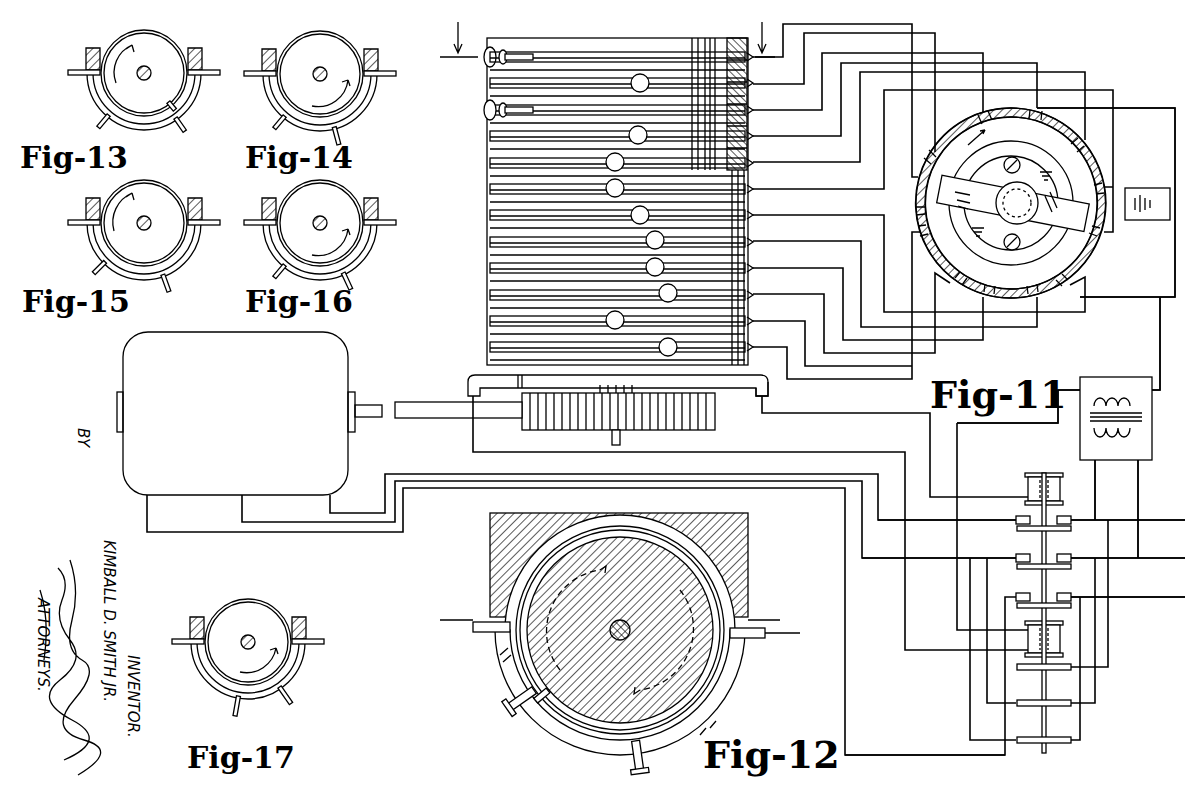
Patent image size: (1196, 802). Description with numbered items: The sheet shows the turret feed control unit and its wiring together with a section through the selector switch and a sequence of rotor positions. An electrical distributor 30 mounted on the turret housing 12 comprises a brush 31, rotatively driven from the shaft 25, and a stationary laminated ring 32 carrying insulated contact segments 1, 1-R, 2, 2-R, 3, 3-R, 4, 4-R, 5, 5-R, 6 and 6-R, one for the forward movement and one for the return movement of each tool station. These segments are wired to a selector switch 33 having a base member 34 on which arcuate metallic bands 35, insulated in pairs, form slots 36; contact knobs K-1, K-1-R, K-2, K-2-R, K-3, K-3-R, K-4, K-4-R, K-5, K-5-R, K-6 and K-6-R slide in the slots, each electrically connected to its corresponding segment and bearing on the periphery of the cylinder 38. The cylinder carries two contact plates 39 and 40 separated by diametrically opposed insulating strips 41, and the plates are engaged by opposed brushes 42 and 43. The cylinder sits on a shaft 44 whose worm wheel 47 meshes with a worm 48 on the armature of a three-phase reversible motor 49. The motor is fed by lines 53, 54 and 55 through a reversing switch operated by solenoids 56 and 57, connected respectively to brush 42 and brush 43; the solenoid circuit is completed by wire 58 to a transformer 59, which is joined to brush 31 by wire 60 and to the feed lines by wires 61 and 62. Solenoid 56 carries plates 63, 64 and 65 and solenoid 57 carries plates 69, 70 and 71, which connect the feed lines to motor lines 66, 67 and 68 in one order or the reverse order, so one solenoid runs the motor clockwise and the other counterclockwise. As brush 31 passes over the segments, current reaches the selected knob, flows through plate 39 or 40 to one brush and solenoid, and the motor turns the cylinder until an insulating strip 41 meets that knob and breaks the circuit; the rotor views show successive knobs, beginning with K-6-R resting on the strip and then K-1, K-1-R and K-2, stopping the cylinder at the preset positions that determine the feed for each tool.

In FIG. 11, the contact segment 1 is at (914, 195).
In FIG. 11, the contact segment 1-R is at (925, 148).
In FIG. 11, the contact segment 2 is at (982, 112).
In FIG. 11, the contact segment 2-R is at (1042, 108).
In FIG. 11, the contact segment 3 is at (1082, 138).
In FIG. 11, the contact segment 3-R is at (1104, 188).
In FIG. 11, the contact segment 4 is at (1104, 236).
In FIG. 11, the contact segment 4-R is at (1070, 286).
In FIG. 11, the contact segment 5 is at (1033, 298).
In FIG. 11, the contact segment 5-R is at (992, 297).
In FIG. 11, the contact segment 6 is at (950, 282).
In FIG. 11, the contact segment 6-R is at (918, 232).
In FIG. 11, the turret housing 12 is at (608, 30).
In FIG. 11, the shaft 25 is at (1046, 258).
In FIG. 11, the electrical distributor 30 is at (1130, 108).
In FIG. 11, the brush 31 is at (953, 212).
In FIG. 11, the stationary laminated ring 32 is at (1106, 168).
In FIG. 11, the selector switch 33 is at (598, 42).
In FIG. 12, the base member 34 is at (748, 550).
In FIG. 11, the arcuate metallic bands 35 is at (748, 70).
In FIG. 12, the arcuate metallic bands 35 is at (733, 708).
In FIG. 11, the slots 36 is at (552, 45).
In FIG. 12, the cylinder 38 is at (593, 751).
In FIG. 12, the contact plate 39 is at (725, 675).
In FIG. 14, the contact plate 39 is at (332, 102).
In FIG. 16, the contact plate 39 is at (332, 251).
In FIG. 17, the contact plate 39 is at (265, 670).
In FIG. 12, the contact plate 40 is at (630, 530).
In FIG. 13, the contact plate 40 is at (144, 107).
In FIG. 15, the contact plate 40 is at (144, 251).
In FIG. 11, the insulating strips 41 is at (517, 382).
In FIG. 12, the insulating strips 41 is at (531, 720).
In FIG. 13, the insulating strips 41 is at (173, 93).
In FIG. 11, the brush 42 is at (766, 390).
In FIG. 12, the brush 42 is at (766, 638).
In FIG. 14, the brush 42 is at (396, 71).
In FIG. 16, the brush 42 is at (397, 222).
In FIG. 17, the brush 42 is at (323, 627).
In FIG. 11, the brush 43 is at (470, 380).
In FIG. 12, the brush 43 is at (478, 628).
In FIG. 13, the brush 43 is at (74, 59).
In FIG. 15, the brush 43 is at (72, 212).
In FIG. 11, the shaft 44 is at (620, 440).
In FIG. 11, the worm wheel 47 is at (716, 424).
In FIG. 11, the worm 48 is at (606, 384).
In FIG. 11, the electric motor 49 is at (340, 376).
In FIG. 11, the feed line 53 is at (1158, 521).
In FIG. 11, the feed line 54 is at (1158, 559).
In FIG. 11, the feed line 55 is at (1158, 598).
In FIG. 11, the solenoid 56 is at (1058, 498).
In FIG. 11, the solenoid 57 is at (1062, 642).
In FIG. 11, the wire 58 is at (958, 438).
In FIG. 11, the transformer 59 is at (1140, 406).
In FIG. 11, the wire 60 is at (1160, 342).
In FIG. 11, the wire 61 is at (1097, 488).
In FIG. 11, the wire 62 is at (1140, 488).
In FIG. 11, the plate 63 is at (1060, 531).
In FIG. 11, the plate 64 is at (1060, 569).
In FIG. 11, the plate 65 is at (1060, 608).
In FIG. 11, the line 66 is at (928, 522).
In FIG. 11, the line 67 is at (928, 560).
In FIG. 11, the line 68 is at (925, 754).
In FIG. 11, the plate 69 is at (1060, 671).
In FIG. 11, the plate 70 is at (1060, 707).
In FIG. 11, the plate 71 is at (1060, 744).
In FIG. 11, the contact knob K-1 is at (515, 46).
In FIG. 12, the contact knob K-1 is at (512, 708).
In FIG. 13, the contact knob K-1 is at (82, 112).
In FIG. 14, the contact knob K-1 is at (264, 114).
In FIG. 11, the contact knob K-1-R is at (642, 78).
In FIG. 14, the contact knob K-1-R is at (366, 135).
In FIG. 15, the contact knob K-1-R is at (192, 287).
In FIG. 11, the contact knob K-2 is at (515, 98).
In FIG. 15, the contact knob K-2 is at (79, 260).
In FIG. 16, the contact knob K-2 is at (263, 263).
In FIG. 11, the contact knob K-2-R is at (640, 130).
In FIG. 16, the contact knob K-2-R is at (370, 286).
In FIG. 11, the contact knob K-3 is at (613, 157).
In FIG. 11, the contact knob K-3-R is at (617, 183).
In FIG. 11, the contact knob K-4 is at (638, 210).
In FIG. 17, the contact knob K-4 is at (245, 714).
In FIG. 11, the contact knob K-4-R is at (655, 236).
In FIG. 11, the contact knob K-5 is at (652, 262).
In FIG. 11, the contact knob K-5-R is at (668, 289).
In FIG. 17, the contact knob K-5-R is at (321, 693).
In FIG. 11, the contact knob K-6 is at (614, 314).
In FIG. 11, the contact knob K-6-R is at (670, 342).
In FIG. 13, the contact knob K-6-R is at (201, 130).